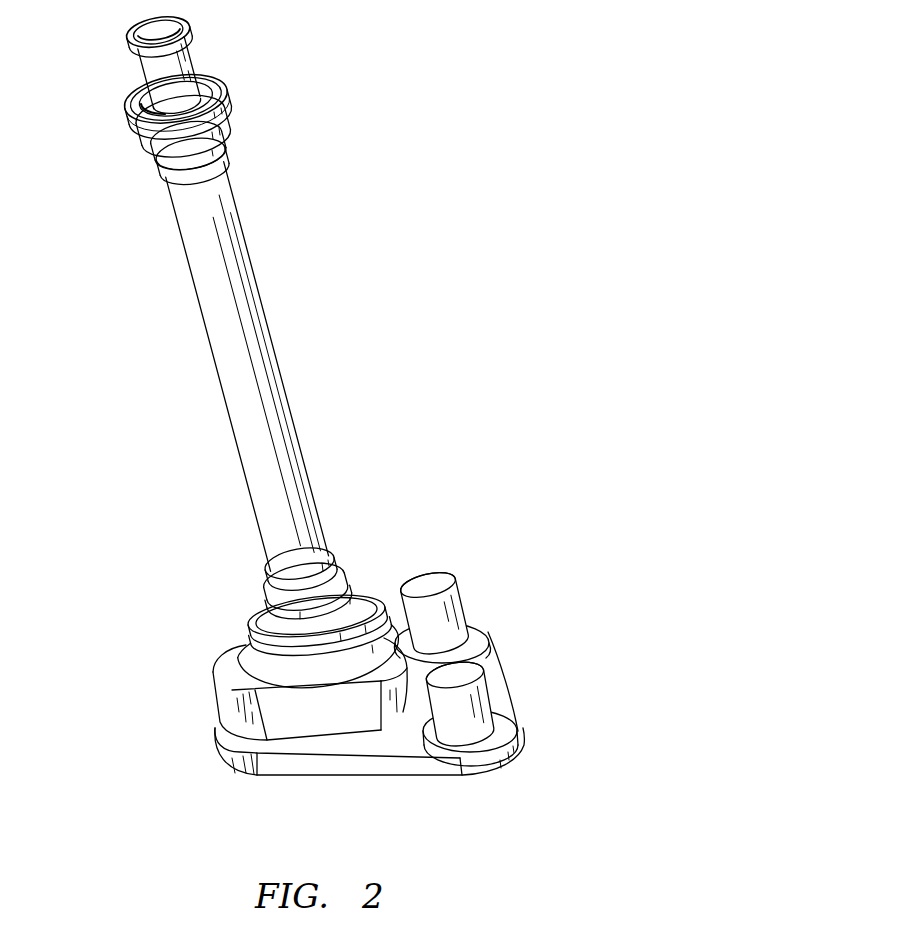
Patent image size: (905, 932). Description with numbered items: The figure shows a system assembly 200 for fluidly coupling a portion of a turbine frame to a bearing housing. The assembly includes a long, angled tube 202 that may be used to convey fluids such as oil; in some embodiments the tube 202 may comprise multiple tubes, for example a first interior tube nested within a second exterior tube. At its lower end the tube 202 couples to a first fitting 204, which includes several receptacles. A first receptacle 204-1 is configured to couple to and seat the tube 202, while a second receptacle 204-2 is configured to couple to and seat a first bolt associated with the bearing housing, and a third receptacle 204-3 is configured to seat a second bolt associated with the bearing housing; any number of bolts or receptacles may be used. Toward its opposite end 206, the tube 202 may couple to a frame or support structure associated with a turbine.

The system assembly 200 is at (480, 104).
The tube 202 is at (217, 354).
The end of the tube 206 is at (125, 108).
The first fitting 204 is at (494, 668).
The first receptacle 204-1 is at (226, 673).
The second receptacle 204-2 is at (479, 518).
The third receptacle 204-3 is at (478, 722).